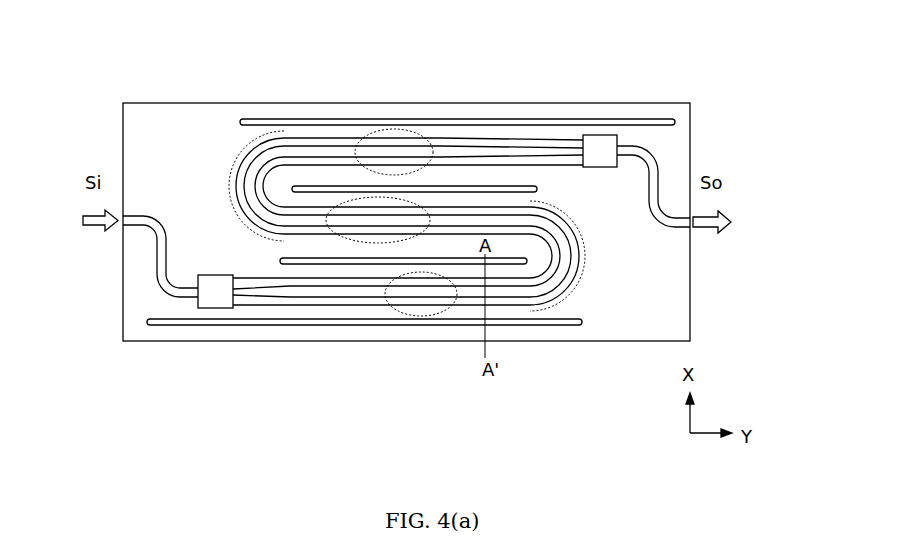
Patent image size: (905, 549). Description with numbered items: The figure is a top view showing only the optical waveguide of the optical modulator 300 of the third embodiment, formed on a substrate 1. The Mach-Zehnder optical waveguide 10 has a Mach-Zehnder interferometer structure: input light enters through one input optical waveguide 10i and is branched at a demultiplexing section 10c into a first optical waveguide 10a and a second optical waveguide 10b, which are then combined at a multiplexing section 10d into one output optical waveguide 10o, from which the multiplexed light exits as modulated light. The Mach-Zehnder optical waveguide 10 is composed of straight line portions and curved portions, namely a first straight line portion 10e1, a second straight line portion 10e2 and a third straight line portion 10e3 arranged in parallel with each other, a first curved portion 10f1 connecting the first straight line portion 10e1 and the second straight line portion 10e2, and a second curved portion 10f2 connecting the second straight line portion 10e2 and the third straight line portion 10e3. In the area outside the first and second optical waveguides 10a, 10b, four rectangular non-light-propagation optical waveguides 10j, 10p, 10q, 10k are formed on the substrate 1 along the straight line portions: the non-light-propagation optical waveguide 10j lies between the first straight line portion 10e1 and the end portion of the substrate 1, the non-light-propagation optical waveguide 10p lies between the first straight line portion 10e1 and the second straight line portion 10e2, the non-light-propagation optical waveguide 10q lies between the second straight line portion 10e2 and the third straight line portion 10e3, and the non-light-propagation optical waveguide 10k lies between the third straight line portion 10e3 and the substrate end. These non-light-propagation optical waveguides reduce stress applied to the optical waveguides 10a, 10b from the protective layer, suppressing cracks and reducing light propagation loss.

The substrate 1 is at (148, 101).
The optical modulator 300 is at (322, 38).
The Mach-Zehnder optical waveguide 10 is at (523, 319).
The first optical waveguide 10a is at (441, 138).
The second optical waveguide 10b is at (485, 157).
The demultiplexing section 10c is at (217, 308).
The multiplexing section 10d is at (600, 135).
The first straight line portion 10e1 is at (429, 316).
The second straight line portion 10e2 is at (333, 199).
The third straight line portion 10e3 is at (390, 129).
The first curved portion 10f1 is at (584, 311).
The second curved portion 10f2 is at (237, 131).
The input optical waveguide 10i is at (135, 225).
The non-light-propagation optical waveguide 10j is at (283, 326).
The non-light-propagation optical waveguide 10k is at (532, 118).
The output optical waveguide 10o is at (678, 230).
The non-light-propagation optical waveguide 10p is at (283, 258).
The non-light-propagation optical waveguide 10q is at (538, 190).